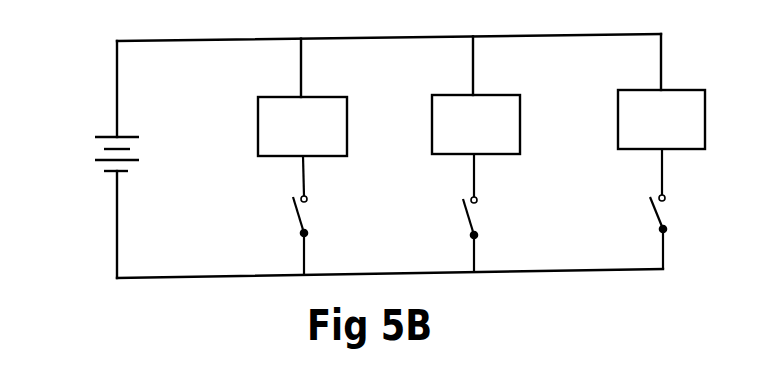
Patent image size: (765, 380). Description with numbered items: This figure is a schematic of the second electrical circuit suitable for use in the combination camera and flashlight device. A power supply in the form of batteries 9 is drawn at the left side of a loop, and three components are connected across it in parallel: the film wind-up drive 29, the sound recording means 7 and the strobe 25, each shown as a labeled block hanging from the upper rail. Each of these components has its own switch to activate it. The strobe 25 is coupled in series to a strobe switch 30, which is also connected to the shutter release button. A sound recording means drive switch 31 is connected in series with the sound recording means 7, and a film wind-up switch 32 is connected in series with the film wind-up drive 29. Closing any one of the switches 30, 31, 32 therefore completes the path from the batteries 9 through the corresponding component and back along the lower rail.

The power supply (batteries) 9 is at (98, 136).
The film wind-up drive 29 is at (302, 126).
The sound recording means 7 is at (476, 124).
The strobe 25 is at (661, 119).
The film wind-up switch 32 is at (296, 218).
The sound recording means drive switch 31 is at (465, 217).
The strobe switch 30 is at (652, 213).